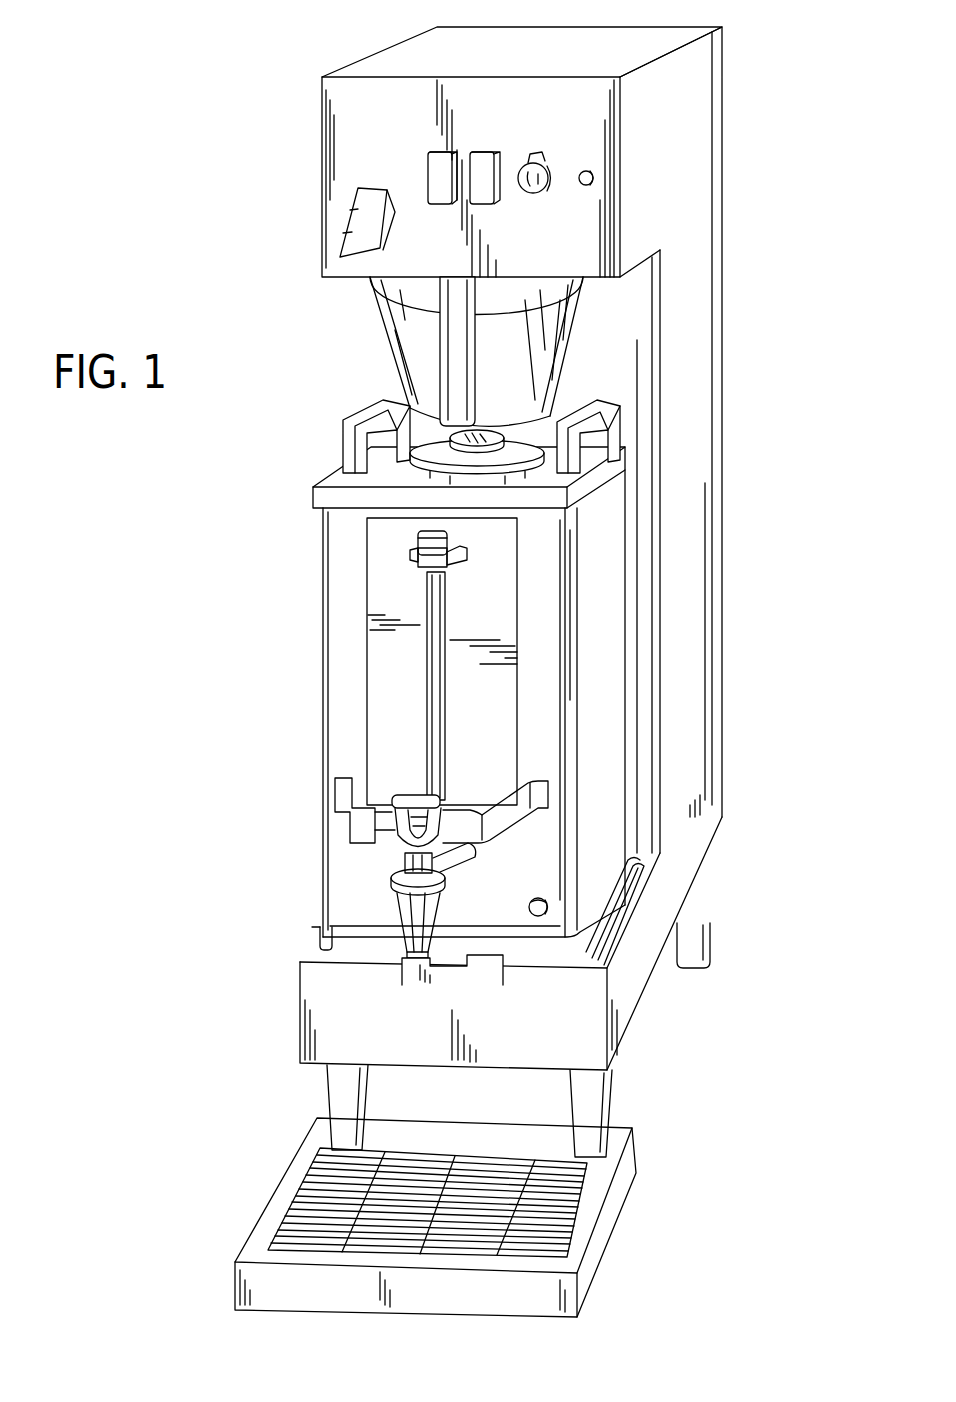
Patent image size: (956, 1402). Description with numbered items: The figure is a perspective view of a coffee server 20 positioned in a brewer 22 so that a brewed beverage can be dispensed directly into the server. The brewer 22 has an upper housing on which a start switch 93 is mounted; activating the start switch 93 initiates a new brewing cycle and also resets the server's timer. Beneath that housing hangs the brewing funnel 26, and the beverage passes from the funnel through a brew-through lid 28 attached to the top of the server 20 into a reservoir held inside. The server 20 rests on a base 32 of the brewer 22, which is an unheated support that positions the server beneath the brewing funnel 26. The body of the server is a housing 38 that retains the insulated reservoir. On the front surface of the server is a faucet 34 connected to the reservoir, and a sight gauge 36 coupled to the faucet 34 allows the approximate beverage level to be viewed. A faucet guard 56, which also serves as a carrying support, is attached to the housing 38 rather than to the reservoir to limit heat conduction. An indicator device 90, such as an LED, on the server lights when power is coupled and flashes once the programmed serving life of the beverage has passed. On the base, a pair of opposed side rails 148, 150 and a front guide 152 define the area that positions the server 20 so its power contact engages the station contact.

The server 20 is at (309, 651).
The brewer 22 is at (218, 183).
The brewing funnel 26 is at (400, 357).
The brew-through lid 28 is at (459, 470).
The base 32 is at (320, 1008).
The faucet 34 is at (412, 911).
The sight gauge 36 is at (430, 735).
The housing 38 is at (343, 853).
The faucet guard 56 is at (473, 836).
The indicator device 90 is at (538, 899).
The start switch 93 is at (432, 175).
The side rail 148 is at (322, 930).
The side rail 150 is at (615, 907).
The front guide 152 is at (472, 978).